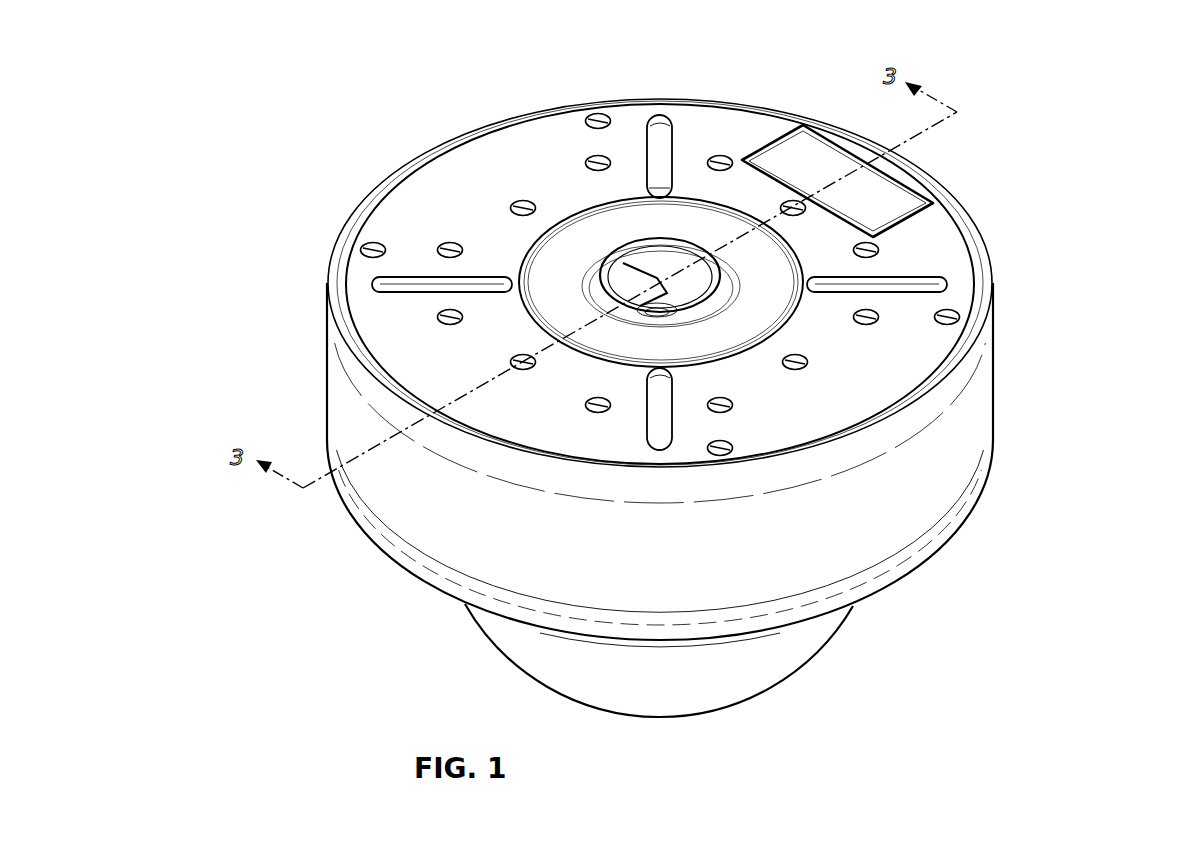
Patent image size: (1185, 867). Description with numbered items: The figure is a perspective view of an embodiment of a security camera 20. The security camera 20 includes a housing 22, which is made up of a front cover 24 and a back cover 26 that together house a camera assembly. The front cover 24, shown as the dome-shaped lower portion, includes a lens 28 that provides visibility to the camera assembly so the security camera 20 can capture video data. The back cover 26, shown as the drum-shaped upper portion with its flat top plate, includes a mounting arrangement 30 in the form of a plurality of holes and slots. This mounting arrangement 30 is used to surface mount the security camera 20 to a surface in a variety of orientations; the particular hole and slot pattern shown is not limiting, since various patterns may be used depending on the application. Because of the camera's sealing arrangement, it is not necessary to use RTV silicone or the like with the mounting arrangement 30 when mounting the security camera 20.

The security camera 20 is at (1084, 97).
The housing 22 is at (982, 474).
The front cover 24 is at (893, 577).
The back cover 26 is at (985, 391).
The lens 28 is at (786, 663).
The mounting arrangement 30 is at (410, 190).